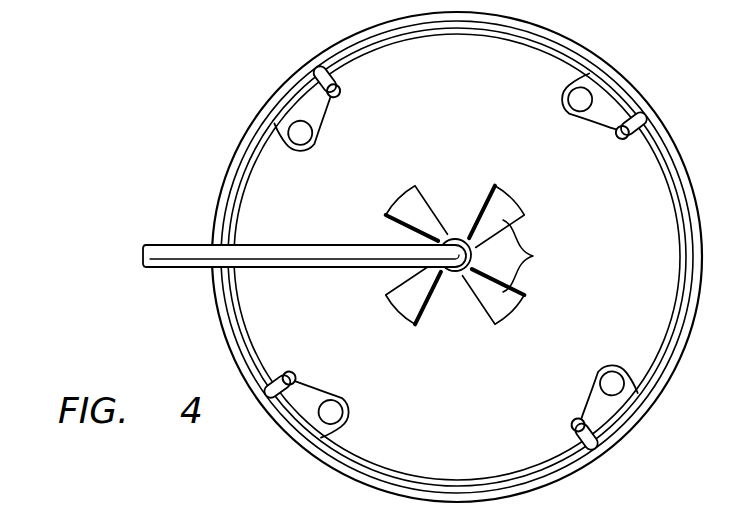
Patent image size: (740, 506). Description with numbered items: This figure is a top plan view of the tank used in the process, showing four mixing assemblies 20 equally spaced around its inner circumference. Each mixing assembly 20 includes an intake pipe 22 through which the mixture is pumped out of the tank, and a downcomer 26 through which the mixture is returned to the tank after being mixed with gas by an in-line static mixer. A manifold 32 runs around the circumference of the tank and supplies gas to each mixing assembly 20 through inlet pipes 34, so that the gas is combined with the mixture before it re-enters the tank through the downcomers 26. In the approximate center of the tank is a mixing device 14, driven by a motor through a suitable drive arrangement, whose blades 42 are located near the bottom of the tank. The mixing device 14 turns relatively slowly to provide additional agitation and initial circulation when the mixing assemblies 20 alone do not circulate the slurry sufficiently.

The mixing device 14 is at (450, 206).
The mixing assembly 20 is at (456, 256).
The intake pipe 22 is at (300, 143).
The downcomer 26 is at (336, 97).
The manifold 32 is at (579, 45).
The inlet pipe 34 is at (340, 87).
The blades 42 is at (534, 256).